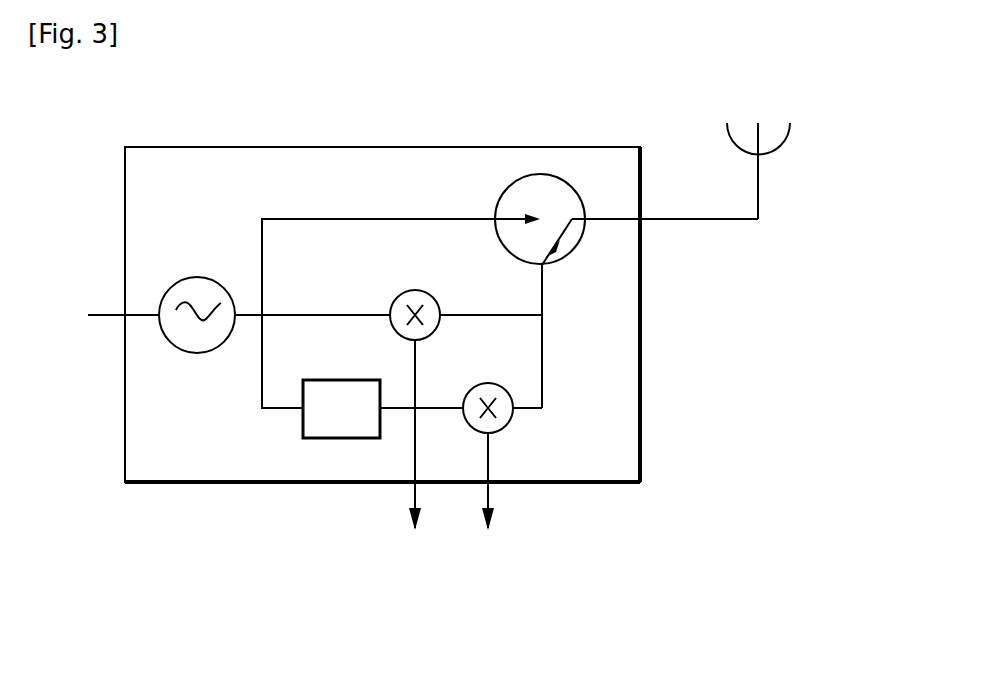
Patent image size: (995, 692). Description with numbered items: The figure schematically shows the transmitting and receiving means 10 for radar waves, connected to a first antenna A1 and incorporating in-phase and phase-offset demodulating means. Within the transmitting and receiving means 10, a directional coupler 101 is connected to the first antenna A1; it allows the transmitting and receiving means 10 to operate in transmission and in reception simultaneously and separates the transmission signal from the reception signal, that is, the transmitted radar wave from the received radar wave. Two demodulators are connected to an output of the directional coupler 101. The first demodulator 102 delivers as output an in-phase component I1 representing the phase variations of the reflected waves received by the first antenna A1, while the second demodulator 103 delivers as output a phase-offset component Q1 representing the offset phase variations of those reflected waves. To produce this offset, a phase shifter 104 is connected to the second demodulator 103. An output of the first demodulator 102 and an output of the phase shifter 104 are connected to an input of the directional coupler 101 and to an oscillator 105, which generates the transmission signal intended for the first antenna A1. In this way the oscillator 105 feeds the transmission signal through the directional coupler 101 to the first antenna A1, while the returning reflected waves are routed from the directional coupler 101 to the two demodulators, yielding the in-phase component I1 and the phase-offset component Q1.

The transmitting and receiving means 10 is at (417, 147).
The directional coupler 101 is at (570, 250).
The first demodulator 102 is at (430, 335).
The second demodulator 103 is at (505, 428).
The phase shifter 104 is at (310, 438).
The oscillator 105 is at (197, 277).
The first antenna A1 is at (758, 180).
The in-phase component I1 is at (402, 435).
The phase-offset component Q1 is at (504, 481).